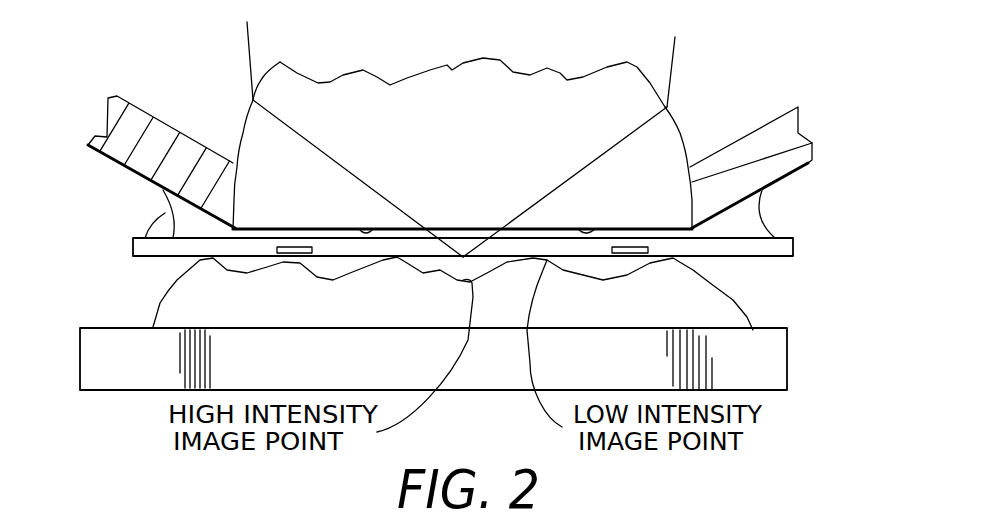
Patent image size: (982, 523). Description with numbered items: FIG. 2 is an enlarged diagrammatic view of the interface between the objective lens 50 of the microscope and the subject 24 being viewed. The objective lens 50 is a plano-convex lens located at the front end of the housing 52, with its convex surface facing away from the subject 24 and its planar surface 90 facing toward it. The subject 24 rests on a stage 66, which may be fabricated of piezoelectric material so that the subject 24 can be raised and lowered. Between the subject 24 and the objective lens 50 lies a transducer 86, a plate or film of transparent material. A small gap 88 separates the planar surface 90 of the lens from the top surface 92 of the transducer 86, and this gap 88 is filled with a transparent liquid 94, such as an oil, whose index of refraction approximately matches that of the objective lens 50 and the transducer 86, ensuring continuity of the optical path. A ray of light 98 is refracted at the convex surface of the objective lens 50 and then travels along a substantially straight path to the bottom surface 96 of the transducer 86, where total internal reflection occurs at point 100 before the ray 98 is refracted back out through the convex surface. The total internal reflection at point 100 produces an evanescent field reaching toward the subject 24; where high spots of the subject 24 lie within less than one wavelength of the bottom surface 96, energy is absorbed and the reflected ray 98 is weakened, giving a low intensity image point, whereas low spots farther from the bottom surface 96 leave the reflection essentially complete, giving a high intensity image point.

The subject 24 is at (157, 303).
The objective lens 50 is at (678, 130).
The housing 52 is at (108, 117).
The stage 66 is at (787, 358).
The transducer 86 is at (793, 249).
The gap 88 is at (580, 230).
The planar surface 90 is at (372, 233).
The top surface 92 is at (160, 214).
The transparent liquid 94 is at (767, 217).
The bottom surface 96 is at (748, 258).
The ray of light 98 is at (248, 43).
The point 100 is at (461, 256).